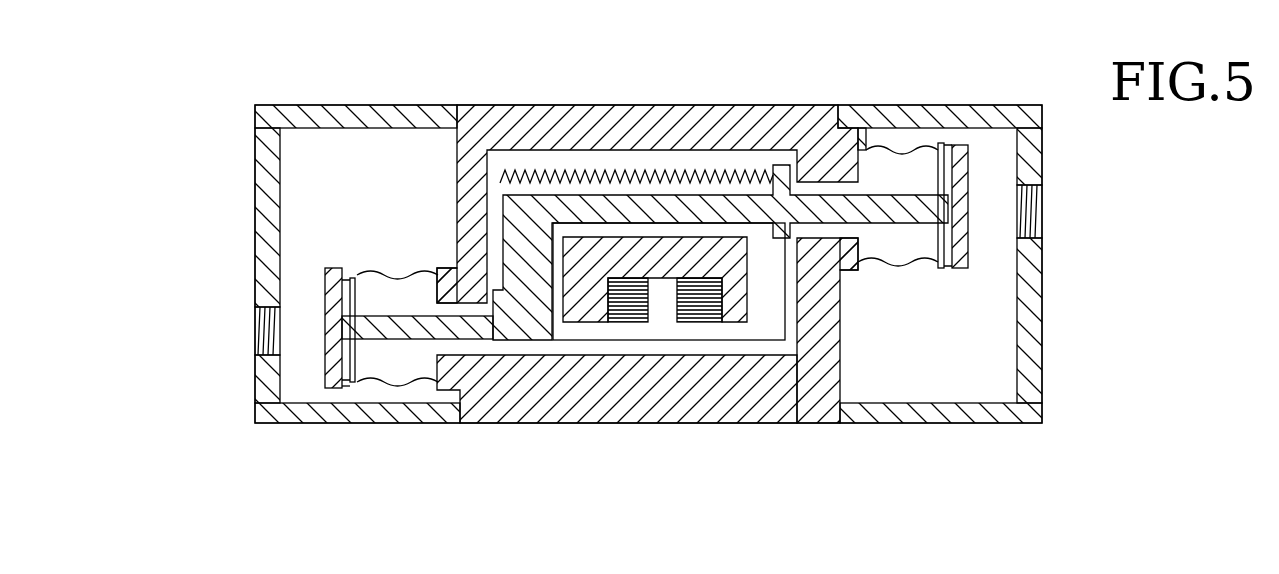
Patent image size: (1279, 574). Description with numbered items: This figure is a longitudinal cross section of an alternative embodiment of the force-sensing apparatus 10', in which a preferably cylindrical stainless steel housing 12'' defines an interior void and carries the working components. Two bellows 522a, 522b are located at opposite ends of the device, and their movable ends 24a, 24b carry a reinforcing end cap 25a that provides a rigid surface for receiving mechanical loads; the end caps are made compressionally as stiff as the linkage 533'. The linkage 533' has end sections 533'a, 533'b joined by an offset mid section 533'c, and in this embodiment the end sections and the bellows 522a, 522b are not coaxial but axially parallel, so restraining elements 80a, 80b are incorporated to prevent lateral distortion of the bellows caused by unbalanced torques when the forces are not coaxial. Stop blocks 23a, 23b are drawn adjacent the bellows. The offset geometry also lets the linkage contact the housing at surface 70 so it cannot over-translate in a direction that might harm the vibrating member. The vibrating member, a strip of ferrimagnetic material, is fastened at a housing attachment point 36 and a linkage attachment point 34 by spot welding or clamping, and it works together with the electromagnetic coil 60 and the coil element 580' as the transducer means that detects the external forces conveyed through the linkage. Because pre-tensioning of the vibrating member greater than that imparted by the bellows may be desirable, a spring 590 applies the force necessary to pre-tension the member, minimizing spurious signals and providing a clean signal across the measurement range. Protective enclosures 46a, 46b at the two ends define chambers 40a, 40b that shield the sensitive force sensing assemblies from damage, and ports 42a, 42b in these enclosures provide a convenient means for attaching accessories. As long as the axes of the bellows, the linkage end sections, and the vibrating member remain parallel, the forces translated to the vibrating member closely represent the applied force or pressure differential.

The apparatus 10' is at (648, 293).
The housing 12'' is at (647, 281).
The right stop block 23a is at (858, 270).
The left stop block 23b is at (437, 270).
The movable end of bellows 24a is at (937, 270).
The movable end of bellows 24b is at (355, 268).
The reinforcing end cap 25a is at (350, 278).
The linkage attachment point 34 is at (540, 340).
The housing attachment point 36 is at (795, 345).
The chamber 40a is at (1010, 352).
The chamber 40b is at (280, 150).
The port 42a is at (1042, 205).
The port 42b is at (255, 326).
The protective enclosure 46a is at (1042, 290).
The protective enclosure 46b is at (255, 203).
The electromagnetic coil 60 is at (675, 325).
The surface 70 is at (586, 237).
The restraining element 80a is at (790, 312).
The restraining element 80b is at (503, 222).
The bellows 522a is at (912, 147).
The bellows 522b is at (345, 395).
The linkage 533' is at (533, 167).
The linkage end section 533'a is at (888, 128).
The linkage end section 533'b is at (409, 418).
The linkage mid section 533'c is at (741, 358).
The coil 580' is at (635, 368).
The spring 590 is at (722, 175).